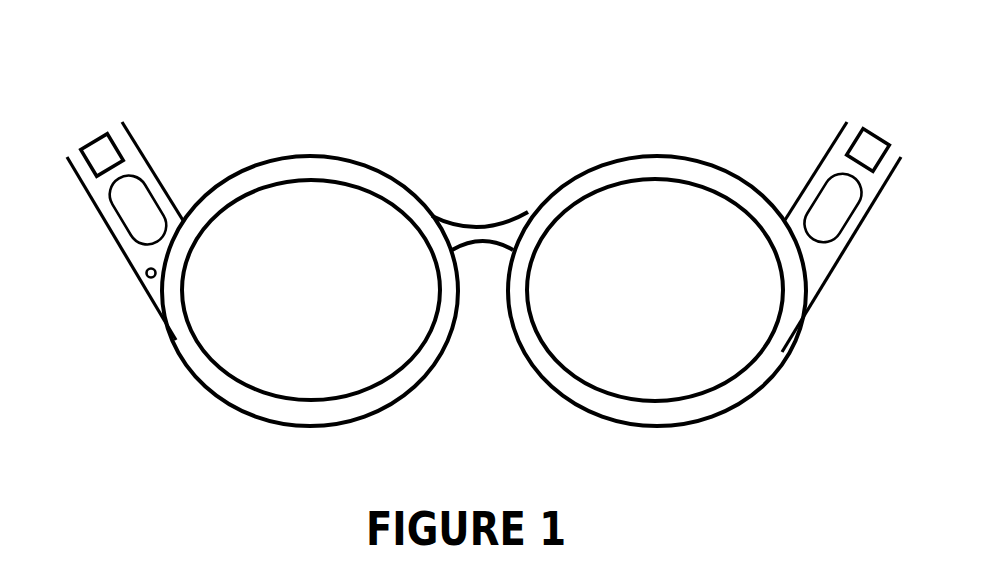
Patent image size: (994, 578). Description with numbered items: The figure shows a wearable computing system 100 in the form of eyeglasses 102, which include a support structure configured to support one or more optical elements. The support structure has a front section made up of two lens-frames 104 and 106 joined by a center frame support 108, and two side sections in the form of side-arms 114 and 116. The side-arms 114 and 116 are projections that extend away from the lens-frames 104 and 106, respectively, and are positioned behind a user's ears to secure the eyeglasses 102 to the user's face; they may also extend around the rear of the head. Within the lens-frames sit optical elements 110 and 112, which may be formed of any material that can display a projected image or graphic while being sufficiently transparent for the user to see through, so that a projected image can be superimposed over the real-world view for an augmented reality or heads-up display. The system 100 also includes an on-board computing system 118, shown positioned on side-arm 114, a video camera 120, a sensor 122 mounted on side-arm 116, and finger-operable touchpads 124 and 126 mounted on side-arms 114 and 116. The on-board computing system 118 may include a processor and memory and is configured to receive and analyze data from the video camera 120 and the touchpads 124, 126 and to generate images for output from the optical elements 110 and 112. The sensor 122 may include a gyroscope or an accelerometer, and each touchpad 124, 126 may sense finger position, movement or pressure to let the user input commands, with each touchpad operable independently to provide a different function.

The system 100 is at (788, 387).
The eyeglasses 102 is at (408, 136).
The lens-frame 104 is at (277, 160).
The lens-frame 106 is at (630, 158).
The center frame support 108 is at (477, 226).
The optical element 110 is at (245, 355).
The optical element 112 is at (595, 372).
The side-arm 114 is at (163, 187).
The side-arm 116 is at (813, 178).
The on-board computing system 118 is at (107, 158).
The video camera 120 is at (142, 277).
The sensor 122 is at (868, 150).
The finger-operable touchpad 124 is at (138, 208).
The finger-operable touchpad 126 is at (832, 217).